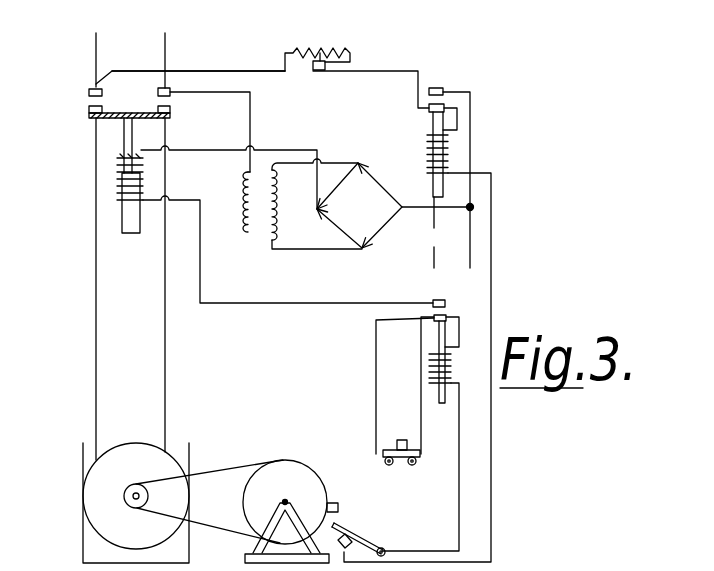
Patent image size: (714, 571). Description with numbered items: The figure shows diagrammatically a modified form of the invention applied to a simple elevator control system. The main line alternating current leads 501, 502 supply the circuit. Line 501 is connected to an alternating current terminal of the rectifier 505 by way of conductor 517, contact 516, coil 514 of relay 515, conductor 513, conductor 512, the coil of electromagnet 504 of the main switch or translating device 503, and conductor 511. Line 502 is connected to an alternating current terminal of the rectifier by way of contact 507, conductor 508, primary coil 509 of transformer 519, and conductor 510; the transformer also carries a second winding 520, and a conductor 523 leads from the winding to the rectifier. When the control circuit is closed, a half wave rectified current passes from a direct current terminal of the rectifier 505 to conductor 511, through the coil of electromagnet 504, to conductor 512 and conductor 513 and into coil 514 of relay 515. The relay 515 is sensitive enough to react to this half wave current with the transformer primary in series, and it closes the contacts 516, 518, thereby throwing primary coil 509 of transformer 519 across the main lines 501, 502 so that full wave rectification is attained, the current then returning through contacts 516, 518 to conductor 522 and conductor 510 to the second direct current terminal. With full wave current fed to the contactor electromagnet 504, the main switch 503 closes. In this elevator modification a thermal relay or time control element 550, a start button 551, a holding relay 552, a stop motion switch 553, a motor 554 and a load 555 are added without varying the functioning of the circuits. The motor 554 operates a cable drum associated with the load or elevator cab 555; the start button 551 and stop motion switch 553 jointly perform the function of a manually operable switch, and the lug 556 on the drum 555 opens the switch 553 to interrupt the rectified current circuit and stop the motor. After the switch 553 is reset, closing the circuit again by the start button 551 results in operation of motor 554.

The main line alternating current lead 501 is at (93, 53).
The main line alternating current lead 502 is at (165, 40).
The main switch or translating device 503 is at (117, 118).
The electromagnet of main switch 504 is at (123, 220).
The rectifier 505 is at (359, 205).
The contact 507 is at (170, 92).
The conductor 508 is at (253, 115).
The primary coil of transformer 509 is at (244, 174).
The conductor 510 is at (466, 237).
The conductor 511 is at (312, 130).
The conductor 512 is at (241, 305).
The conductor 513 is at (493, 272).
The coil of relay 514 is at (429, 144).
The relay 515 is at (433, 187).
The contact 516 is at (430, 111).
The conductor 517 is at (237, 70).
The contact 518 is at (438, 88).
The transformer 519 is at (268, 207).
The transformer secondary winding 520 is at (280, 175).
The conductor 522 is at (471, 128).
The conductor 523 is at (342, 162).
The thermal relay or time control element 550 is at (321, 56).
The start button 551 is at (398, 440).
The holding relay 552 is at (445, 323).
The stop motion switch 553 is at (373, 546).
The motor 554 is at (92, 490).
The load or drum 555 is at (296, 462).
The lug 556 is at (339, 508).